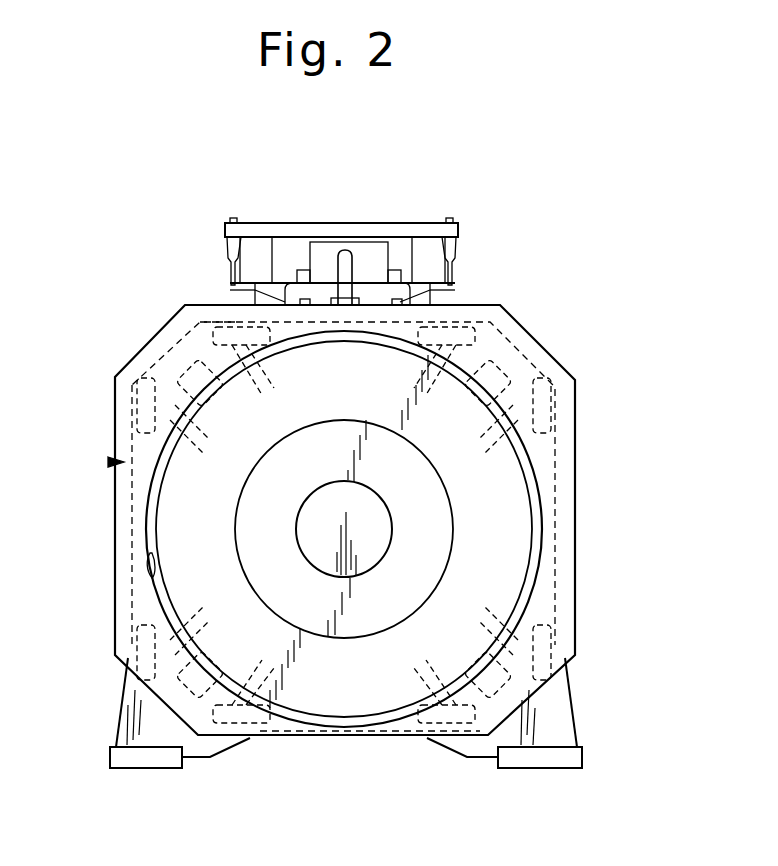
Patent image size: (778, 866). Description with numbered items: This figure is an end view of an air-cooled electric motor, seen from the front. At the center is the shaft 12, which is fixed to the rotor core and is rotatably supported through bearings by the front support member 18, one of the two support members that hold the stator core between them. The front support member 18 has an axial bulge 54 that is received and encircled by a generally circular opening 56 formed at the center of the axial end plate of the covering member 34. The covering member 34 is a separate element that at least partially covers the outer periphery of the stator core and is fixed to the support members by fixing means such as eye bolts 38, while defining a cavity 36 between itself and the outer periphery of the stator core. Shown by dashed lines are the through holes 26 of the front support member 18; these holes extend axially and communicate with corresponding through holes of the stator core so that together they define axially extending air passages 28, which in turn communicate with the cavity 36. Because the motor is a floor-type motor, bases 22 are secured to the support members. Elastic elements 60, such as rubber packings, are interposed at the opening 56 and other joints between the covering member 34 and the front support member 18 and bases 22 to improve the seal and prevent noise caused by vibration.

The shaft 12 is at (315, 527).
The front support member 18 is at (503, 508).
The bases 22 is at (560, 722).
The through holes 26 is at (200, 336).
The air passages 28 is at (150, 430).
The covering member 34 is at (533, 333).
The cavity 36 is at (110, 462).
The eye bolts 38 is at (345, 250).
The axial bulge 54 is at (503, 565).
The circular opening 56 is at (150, 576).
The elastic elements 60 is at (150, 498).